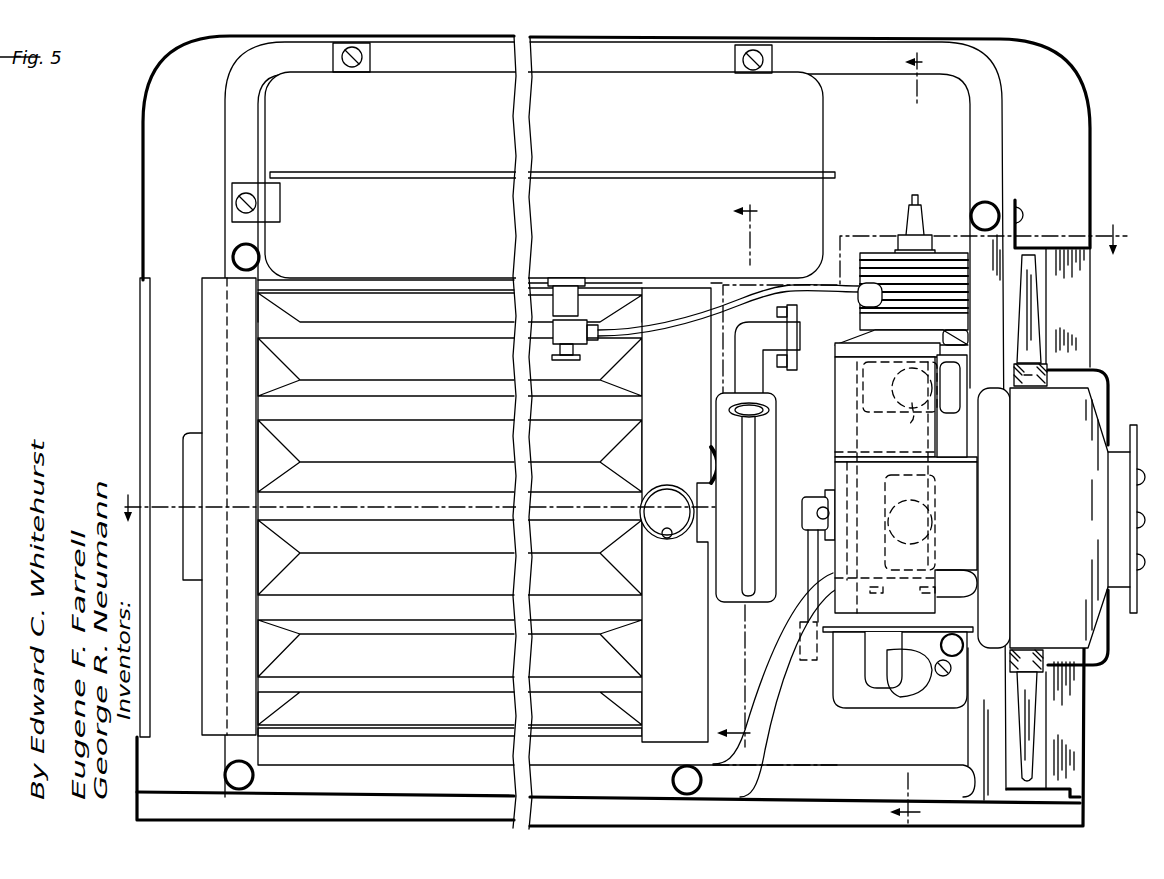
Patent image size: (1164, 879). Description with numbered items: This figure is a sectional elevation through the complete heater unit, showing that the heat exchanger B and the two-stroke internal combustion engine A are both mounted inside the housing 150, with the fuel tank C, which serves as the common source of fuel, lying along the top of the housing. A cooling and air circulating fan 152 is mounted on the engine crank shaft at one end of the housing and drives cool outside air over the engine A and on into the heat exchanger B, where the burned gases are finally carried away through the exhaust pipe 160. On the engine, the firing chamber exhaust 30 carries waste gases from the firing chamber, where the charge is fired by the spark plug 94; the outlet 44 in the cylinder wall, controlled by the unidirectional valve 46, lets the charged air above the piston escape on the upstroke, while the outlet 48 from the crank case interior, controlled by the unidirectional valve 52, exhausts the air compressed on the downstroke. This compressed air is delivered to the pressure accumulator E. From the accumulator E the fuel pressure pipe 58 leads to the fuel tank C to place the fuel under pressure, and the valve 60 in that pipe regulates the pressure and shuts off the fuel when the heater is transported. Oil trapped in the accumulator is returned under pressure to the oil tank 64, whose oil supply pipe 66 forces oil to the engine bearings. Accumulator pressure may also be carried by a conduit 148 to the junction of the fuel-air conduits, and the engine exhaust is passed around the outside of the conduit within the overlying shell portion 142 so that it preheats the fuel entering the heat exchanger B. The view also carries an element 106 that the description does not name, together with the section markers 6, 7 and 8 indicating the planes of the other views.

The housing 150 is at (143, 173).
The heat exchanger B is at (213, 277).
The fuel tank C is at (826, 128).
The fuel pressure pipe 58 is at (572, 278).
The valve 60 is at (580, 325).
The spark plug 94 is at (910, 215).
The firing chamber exhaust 30 is at (952, 335).
The valve 46 is at (953, 378).
The outlet 44 is at (918, 422).
The unidirectional valve 52 is at (923, 497).
The outlet 48 is at (920, 533).
The accumulator E is at (893, 478).
The internal combustion engine A is at (978, 437).
The overlying shell portion 142 is at (768, 477).
The oil supply pipe 66 is at (815, 575).
The exhaust pipe 160 is at (667, 540).
The mounting plate 106 is at (932, 606).
The oil tank 64 is at (858, 708).
The conduit 148 is at (900, 697).
The cooling and air circulating fan 152 is at (1032, 308).
The section line 6- 6 is at (624, 362).
The section line 7- 7 is at (915, 439).
The section line 8- 8 is at (746, 474).